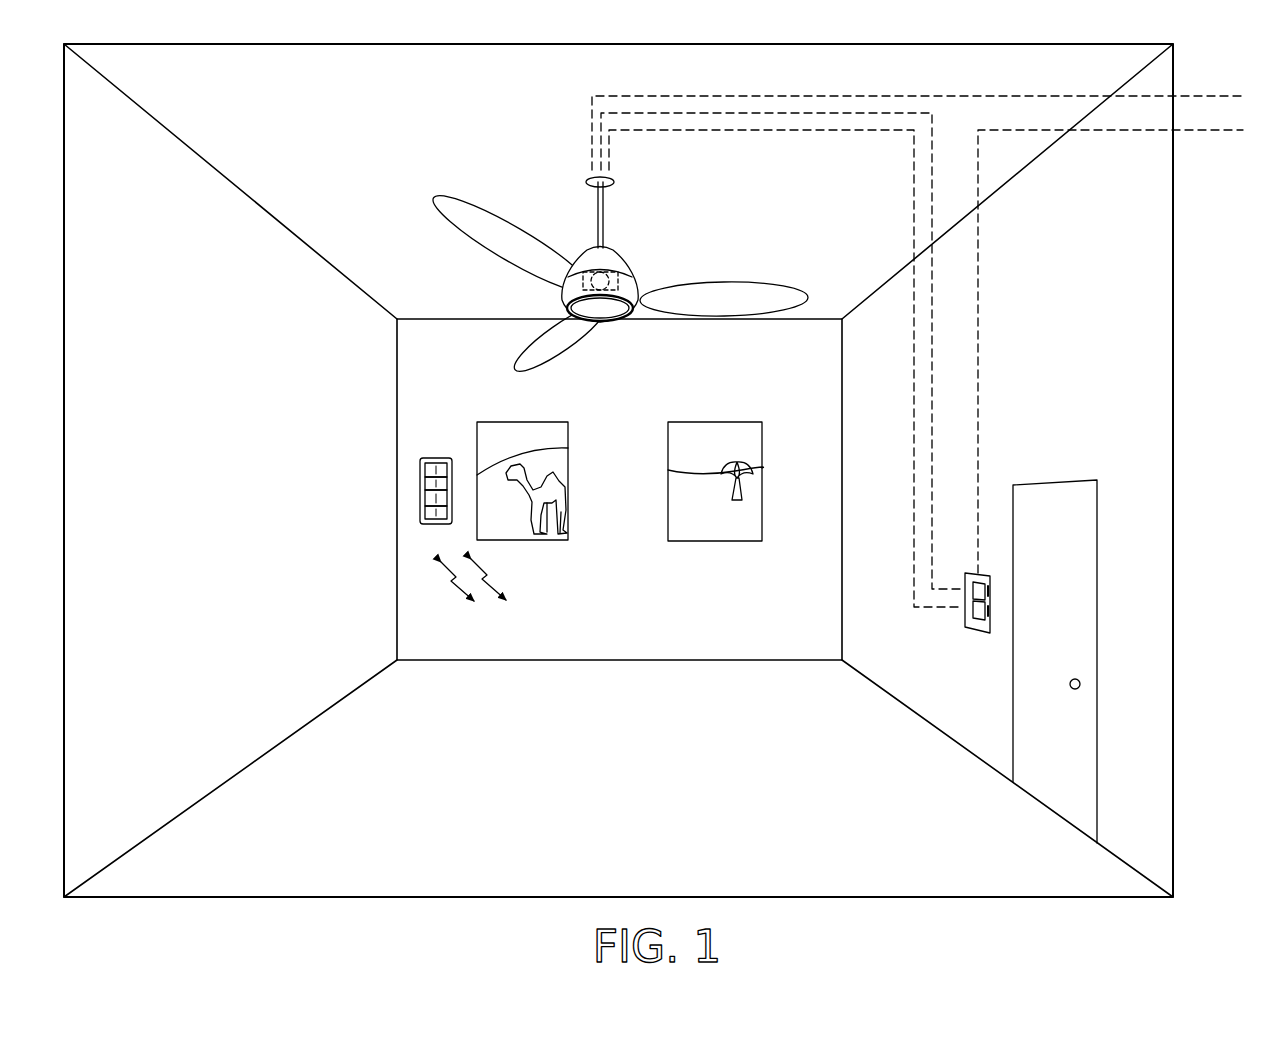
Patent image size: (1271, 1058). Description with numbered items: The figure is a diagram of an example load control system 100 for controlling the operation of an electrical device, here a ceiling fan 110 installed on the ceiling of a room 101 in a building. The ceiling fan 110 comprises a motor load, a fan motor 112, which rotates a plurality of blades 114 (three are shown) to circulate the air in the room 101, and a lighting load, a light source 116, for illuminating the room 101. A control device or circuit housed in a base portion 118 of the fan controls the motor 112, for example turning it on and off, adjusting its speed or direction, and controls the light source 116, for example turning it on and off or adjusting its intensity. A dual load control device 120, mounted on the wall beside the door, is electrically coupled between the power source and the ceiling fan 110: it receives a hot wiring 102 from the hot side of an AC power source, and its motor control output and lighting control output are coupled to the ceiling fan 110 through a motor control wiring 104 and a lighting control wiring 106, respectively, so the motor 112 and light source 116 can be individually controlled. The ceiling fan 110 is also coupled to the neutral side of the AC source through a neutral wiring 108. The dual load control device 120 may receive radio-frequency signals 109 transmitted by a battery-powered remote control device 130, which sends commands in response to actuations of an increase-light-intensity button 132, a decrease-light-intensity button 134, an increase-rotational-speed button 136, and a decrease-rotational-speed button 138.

The load control system 100 is at (322, 126).
The room 101 is at (181, 546).
The hot wiring 102 is at (1132, 130).
The motor control wiring 104 is at (912, 430).
The lighting control wiring 106 is at (931, 425).
The neutral wiring 108 is at (1017, 96).
The radio-frequency signals 109 is at (492, 590).
The ceiling fan 110 is at (616, 290).
The fan motor 112 is at (556, 284).
The blades 114 is at (507, 240).
The light source 116 is at (598, 312).
The base portion 118 is at (613, 258).
The dual load control device 120 is at (978, 628).
The remote control device 130 is at (372, 472).
The increase-light-intensity button 132 is at (425, 467).
The decrease-light-intensity button 134 is at (425, 483).
The increase-rotational-speed button 136 is at (436, 497).
The decrease-rotational-speed button 138 is at (438, 512).